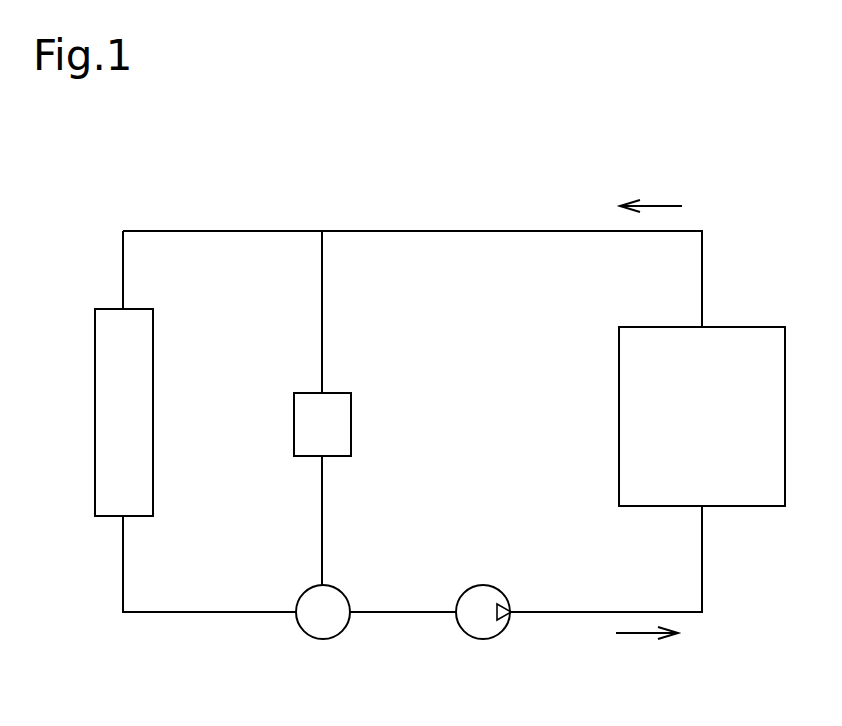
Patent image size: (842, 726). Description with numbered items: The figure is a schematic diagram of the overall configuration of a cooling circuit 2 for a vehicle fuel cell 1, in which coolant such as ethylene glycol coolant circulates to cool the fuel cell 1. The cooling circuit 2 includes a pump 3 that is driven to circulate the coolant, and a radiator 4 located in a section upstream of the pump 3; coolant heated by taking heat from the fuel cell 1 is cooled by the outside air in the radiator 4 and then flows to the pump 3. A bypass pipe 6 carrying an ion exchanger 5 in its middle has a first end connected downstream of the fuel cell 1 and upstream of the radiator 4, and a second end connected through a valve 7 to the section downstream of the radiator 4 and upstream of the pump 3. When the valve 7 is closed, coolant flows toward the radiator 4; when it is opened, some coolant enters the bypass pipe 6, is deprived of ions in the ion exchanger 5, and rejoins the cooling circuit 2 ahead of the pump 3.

The fuel cell 1 is at (766, 327).
The cooling circuit 2 is at (703, 230).
The pump 3 is at (485, 586).
The radiator 4 is at (139, 309).
The ion exchanger 5 is at (340, 393).
The bypass pipe 6 is at (323, 298).
The valve 7 is at (341, 592).